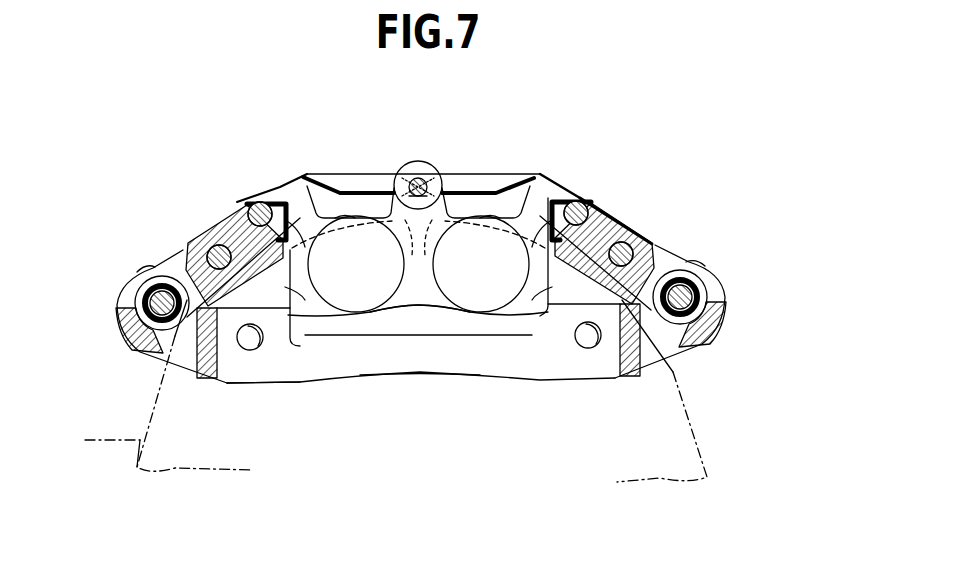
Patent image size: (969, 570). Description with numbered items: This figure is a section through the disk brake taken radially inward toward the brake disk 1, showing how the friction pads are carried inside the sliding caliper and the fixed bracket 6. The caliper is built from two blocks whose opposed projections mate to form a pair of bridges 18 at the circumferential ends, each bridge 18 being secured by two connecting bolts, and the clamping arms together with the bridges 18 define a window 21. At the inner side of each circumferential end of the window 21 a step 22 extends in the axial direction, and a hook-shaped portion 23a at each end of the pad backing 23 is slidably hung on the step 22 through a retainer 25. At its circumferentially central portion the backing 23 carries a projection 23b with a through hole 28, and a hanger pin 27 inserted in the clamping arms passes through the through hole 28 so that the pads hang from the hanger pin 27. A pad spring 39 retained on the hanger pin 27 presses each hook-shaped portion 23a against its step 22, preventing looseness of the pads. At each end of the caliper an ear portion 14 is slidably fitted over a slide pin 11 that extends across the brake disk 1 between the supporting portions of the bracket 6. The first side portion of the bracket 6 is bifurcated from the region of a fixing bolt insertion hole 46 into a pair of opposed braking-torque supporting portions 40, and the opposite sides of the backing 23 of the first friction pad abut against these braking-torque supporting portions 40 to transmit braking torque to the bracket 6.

The brake disk 1 is at (104, 441).
The bracket 6 is at (306, 387).
The slide pin 11 is at (137, 309).
The ear portion 14 is at (152, 268).
The bridge 18 is at (210, 218).
The window 21 is at (465, 172).
The step 22 is at (247, 200).
The backing 23 is at (427, 298).
The hook-shaped portion 23a is at (282, 186).
The projection 23b is at (415, 166).
The retainer 25 is at (418, 249).
The hanger pin 27 is at (435, 170).
The through hole 28 is at (410, 172).
The pad spring 39 is at (493, 180).
The braking-torque supporting portion 40 is at (418, 299).
The fixing bolt insertion hole 46 is at (250, 351).